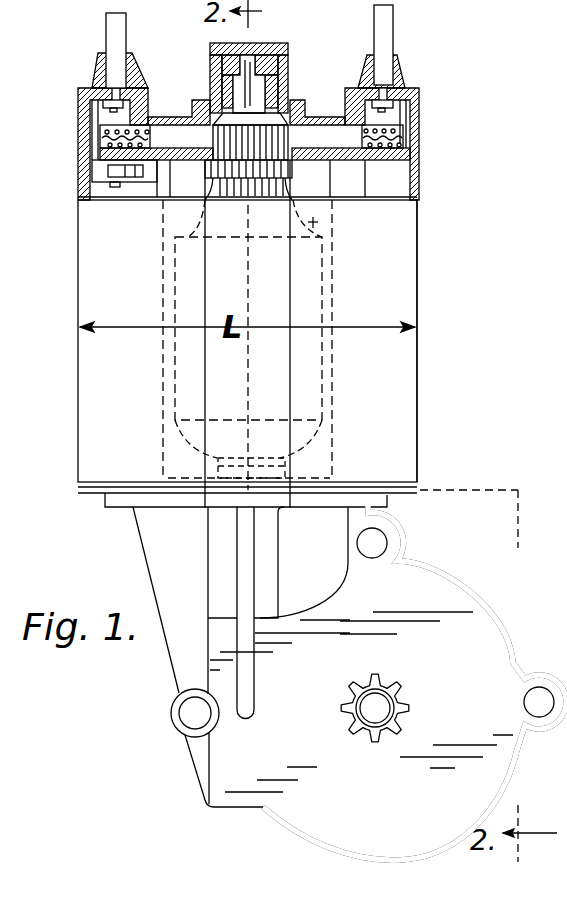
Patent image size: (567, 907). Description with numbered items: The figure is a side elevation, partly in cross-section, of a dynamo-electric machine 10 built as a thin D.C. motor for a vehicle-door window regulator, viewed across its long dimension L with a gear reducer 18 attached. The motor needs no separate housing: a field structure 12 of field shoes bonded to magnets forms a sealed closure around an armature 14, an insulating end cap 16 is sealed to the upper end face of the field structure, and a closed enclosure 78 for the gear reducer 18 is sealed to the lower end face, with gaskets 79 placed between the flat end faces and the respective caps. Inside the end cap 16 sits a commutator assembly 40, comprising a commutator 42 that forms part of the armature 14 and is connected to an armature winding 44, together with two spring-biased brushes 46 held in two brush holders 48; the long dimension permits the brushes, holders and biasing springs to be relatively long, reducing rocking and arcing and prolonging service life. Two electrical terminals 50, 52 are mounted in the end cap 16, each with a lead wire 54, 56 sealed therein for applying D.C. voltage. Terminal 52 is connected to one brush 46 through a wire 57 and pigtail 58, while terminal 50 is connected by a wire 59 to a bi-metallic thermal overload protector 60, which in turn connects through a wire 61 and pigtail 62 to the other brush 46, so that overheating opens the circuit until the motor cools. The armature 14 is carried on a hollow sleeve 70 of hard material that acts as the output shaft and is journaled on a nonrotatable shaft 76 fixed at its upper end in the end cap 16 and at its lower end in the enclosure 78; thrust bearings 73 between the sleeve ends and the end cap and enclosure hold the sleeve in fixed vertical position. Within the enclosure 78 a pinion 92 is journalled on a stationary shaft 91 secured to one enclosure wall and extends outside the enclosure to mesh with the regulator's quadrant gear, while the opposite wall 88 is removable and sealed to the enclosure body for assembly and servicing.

The dynamo-electric machine 10 is at (443, 297).
The field structure 12 is at (410, 250).
The armature 14 is at (308, 296).
The end cap 16 is at (416, 160).
The gear reducer 18 is at (437, 563).
The commutator assembly 40 is at (219, 124).
The commutator 42 is at (273, 113).
The armature winding 44 is at (326, 225).
The brush 46 is at (167, 133).
The brush holder 48 is at (115, 128).
The electrical terminal 50 is at (108, 101).
The electrical terminal 52 is at (397, 76).
The lead wire 54 is at (108, 26).
The lead wire 56 is at (386, 21).
The wire 57 is at (400, 118).
The pigtail 58 is at (400, 133).
The wire 59 is at (106, 130).
The bi-metallic thermal overload protector 60 is at (137, 180).
The wire 61 is at (106, 163).
The pigtail 62 is at (106, 147).
The hollow sleeve 70 is at (282, 78).
The thrust bearing 73 is at (277, 75).
The nonrotatable shaft 76 is at (243, 55).
The enclosure 78 is at (505, 633).
The gasket 79 is at (423, 200).
The wall 88 is at (485, 670).
The stationary shaft 91 is at (368, 714).
The pinion 92 is at (392, 738).